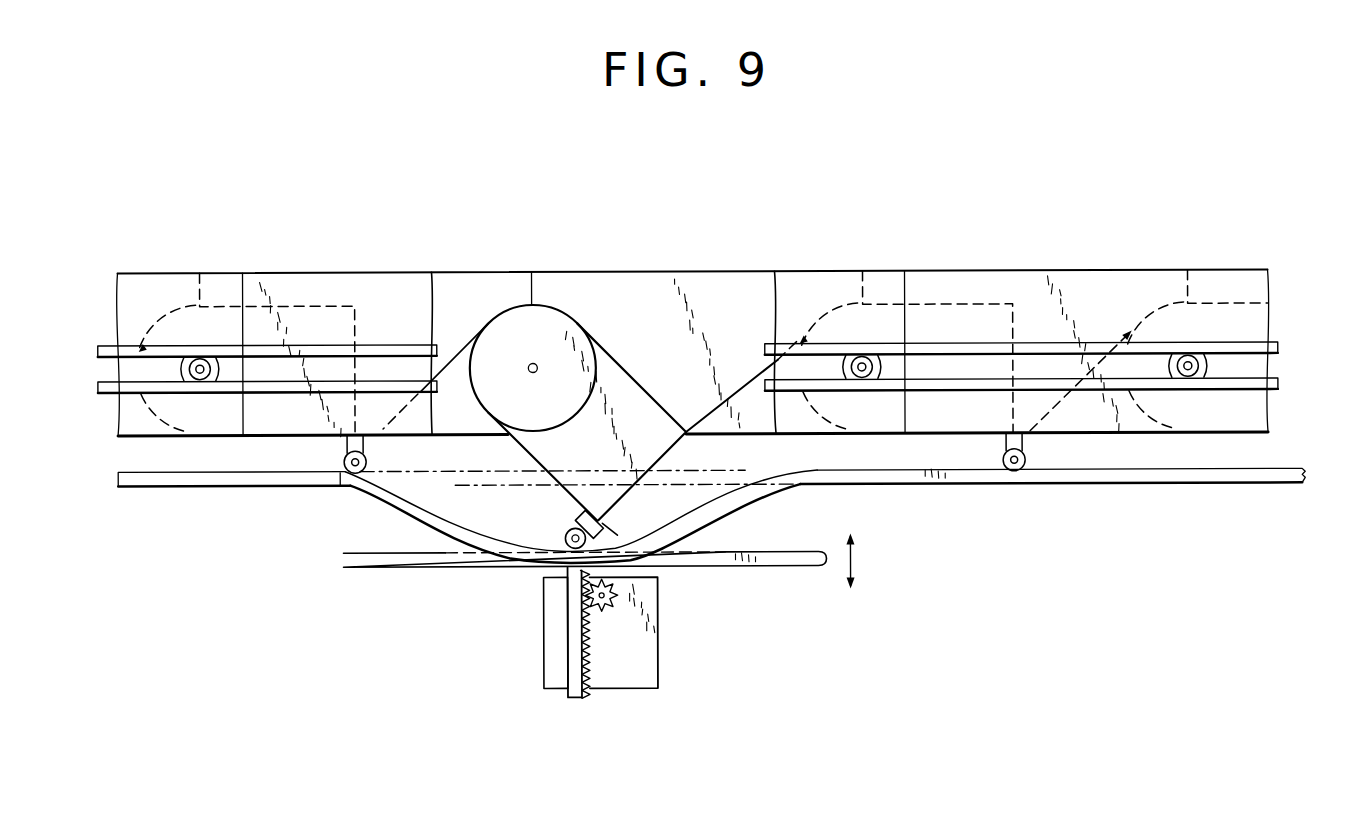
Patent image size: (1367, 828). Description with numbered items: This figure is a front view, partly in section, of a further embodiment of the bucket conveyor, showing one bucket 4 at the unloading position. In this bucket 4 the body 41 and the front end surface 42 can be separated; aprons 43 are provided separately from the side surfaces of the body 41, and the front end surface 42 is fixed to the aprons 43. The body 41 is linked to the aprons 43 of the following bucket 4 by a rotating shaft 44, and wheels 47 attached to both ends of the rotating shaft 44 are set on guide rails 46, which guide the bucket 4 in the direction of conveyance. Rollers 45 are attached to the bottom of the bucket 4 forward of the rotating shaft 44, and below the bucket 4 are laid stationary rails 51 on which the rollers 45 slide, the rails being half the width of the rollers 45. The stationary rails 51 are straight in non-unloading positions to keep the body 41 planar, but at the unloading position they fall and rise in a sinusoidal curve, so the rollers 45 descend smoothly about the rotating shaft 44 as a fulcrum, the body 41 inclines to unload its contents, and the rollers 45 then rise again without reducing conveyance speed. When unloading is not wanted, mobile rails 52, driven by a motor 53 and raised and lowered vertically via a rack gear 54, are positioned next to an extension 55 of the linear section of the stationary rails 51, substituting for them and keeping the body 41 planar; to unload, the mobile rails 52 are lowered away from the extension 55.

The bucket 4 is at (492, 308).
The body 41 is at (603, 378).
The front end surface 42 is at (749, 392).
The aprons 43 is at (1100, 288).
The rotating shaft 44 is at (535, 364).
The rollers 45 is at (562, 533).
The guide rails 46 is at (1273, 382).
The wheels 47 is at (172, 370).
The stationary rails 51 is at (1153, 474).
The mobile rails 52 is at (780, 563).
The motor 53 is at (622, 672).
The rack gear 54 is at (567, 648).
The extension 55 is at (700, 487).